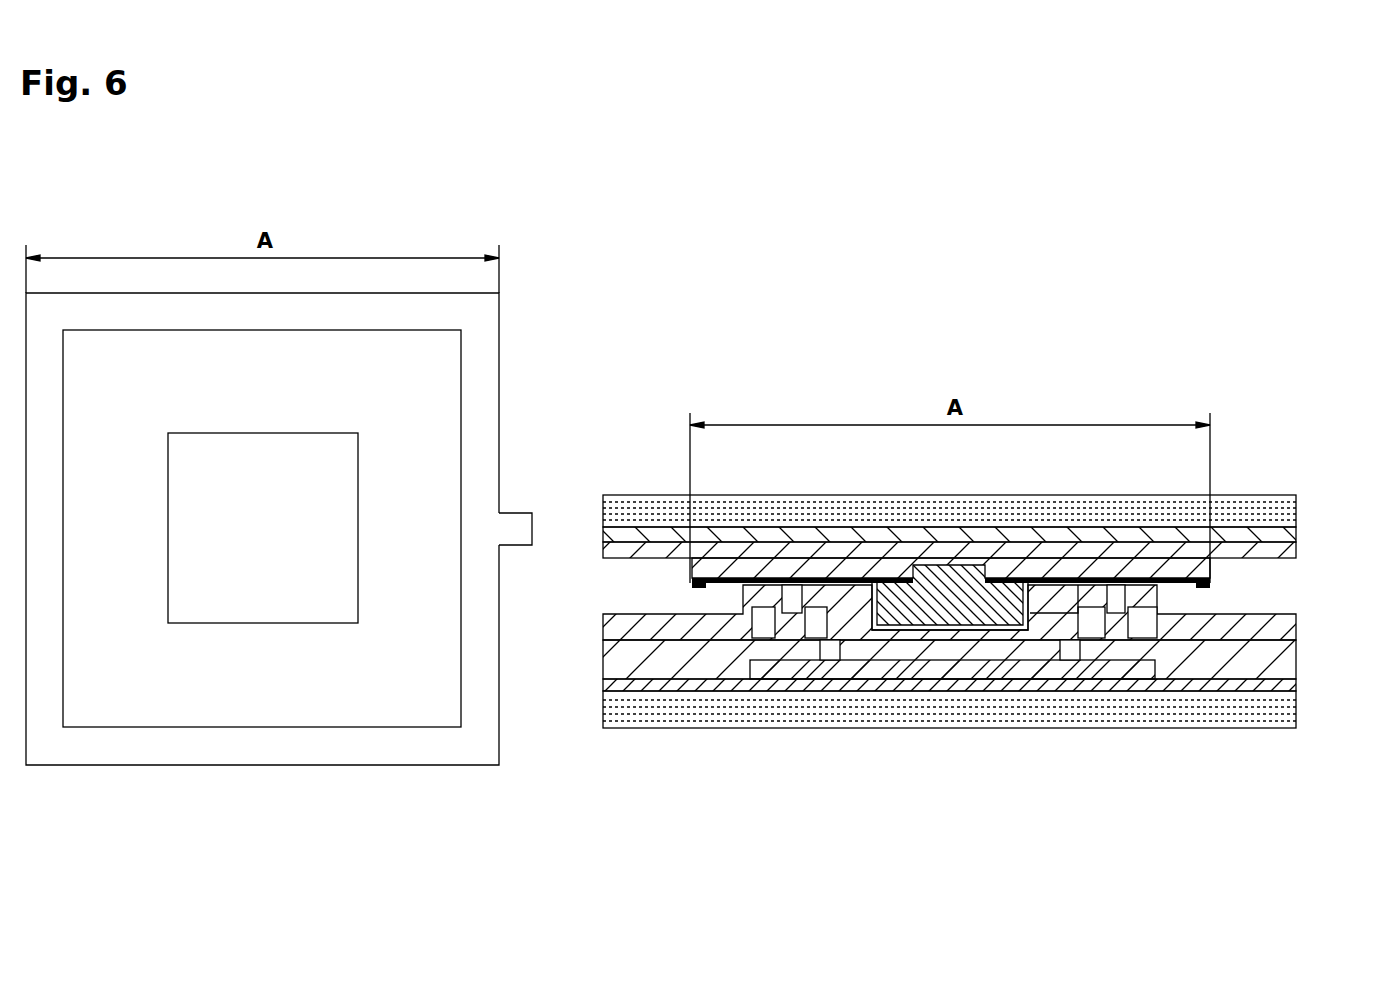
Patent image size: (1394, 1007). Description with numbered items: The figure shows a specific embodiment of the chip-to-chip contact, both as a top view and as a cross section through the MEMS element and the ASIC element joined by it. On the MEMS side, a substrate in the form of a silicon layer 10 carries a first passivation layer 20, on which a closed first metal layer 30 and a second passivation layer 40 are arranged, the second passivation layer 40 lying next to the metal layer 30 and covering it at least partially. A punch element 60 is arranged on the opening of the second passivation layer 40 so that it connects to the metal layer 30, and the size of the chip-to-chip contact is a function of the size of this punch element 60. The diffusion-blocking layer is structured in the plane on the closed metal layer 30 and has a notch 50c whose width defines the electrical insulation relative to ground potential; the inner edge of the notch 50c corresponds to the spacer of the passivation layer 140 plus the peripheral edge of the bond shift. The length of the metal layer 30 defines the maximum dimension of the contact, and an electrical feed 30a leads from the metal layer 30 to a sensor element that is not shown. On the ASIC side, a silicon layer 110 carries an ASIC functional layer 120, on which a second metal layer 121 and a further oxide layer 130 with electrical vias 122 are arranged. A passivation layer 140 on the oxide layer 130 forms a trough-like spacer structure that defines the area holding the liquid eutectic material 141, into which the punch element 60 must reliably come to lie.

The silicon layer 10 is at (1297, 512).
The first passivation layer 20 is at (1297, 540).
The first metal layer 30 is at (430, 397).
The electrical feed 30a is at (518, 537).
The second passivation layer 40 is at (1287, 549).
The notch 50c is at (477, 334).
The punch element 60 is at (323, 462).
The silicon layer 110 is at (1296, 716).
The ASIC functional layer 120 is at (1296, 684).
The second metal layer 121 is at (948, 665).
The electrical vias 122 is at (840, 650).
The further oxide layer 130 is at (1296, 652).
The passivation layer 140 is at (1298, 622).
The liquid eutectic material 141 is at (1048, 588).